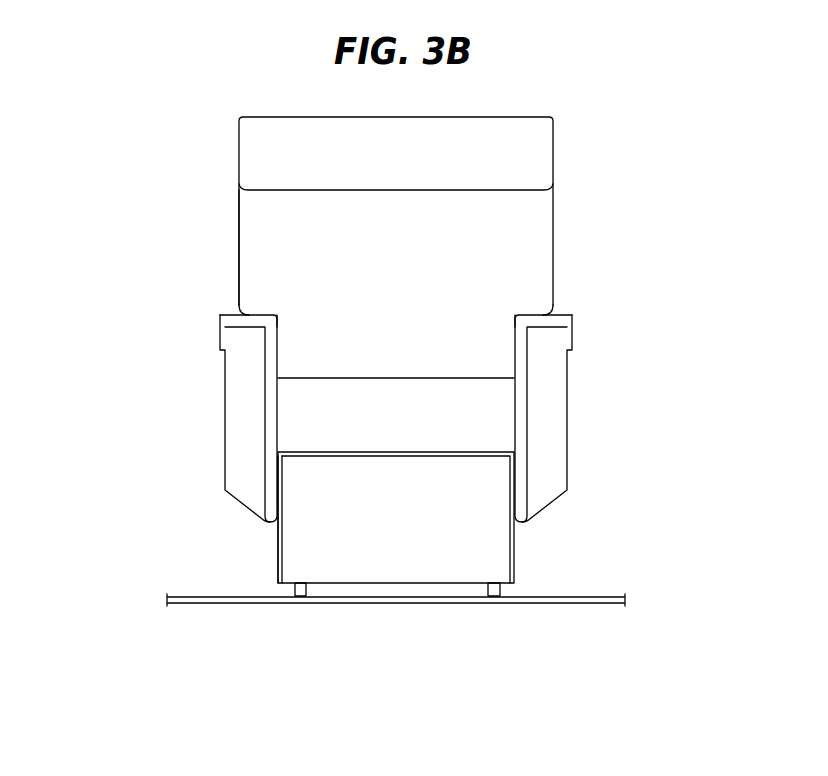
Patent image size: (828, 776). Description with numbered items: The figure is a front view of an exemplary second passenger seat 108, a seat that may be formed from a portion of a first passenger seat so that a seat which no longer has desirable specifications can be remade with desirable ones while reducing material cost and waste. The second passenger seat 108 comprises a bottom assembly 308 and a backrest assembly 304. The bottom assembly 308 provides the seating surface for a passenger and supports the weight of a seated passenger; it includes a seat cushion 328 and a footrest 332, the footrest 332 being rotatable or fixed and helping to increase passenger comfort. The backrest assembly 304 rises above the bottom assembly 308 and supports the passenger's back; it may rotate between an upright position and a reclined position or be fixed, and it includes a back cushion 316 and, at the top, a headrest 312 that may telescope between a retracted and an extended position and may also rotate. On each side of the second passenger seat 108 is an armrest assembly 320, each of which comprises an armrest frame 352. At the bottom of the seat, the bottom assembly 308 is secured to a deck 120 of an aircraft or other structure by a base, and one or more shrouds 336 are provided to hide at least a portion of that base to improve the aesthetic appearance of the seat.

The second passenger seat 108 is at (118, 319).
The deck 120 is at (583, 596).
The backrest assembly 304 is at (580, 220).
The bottom assembly 308 is at (590, 462).
The headrest 312 is at (312, 115).
The back cushion 316 is at (238, 260).
The armrest assembly 320 is at (205, 388).
The seat cushion 328 is at (351, 377).
The footrest 332 is at (278, 575).
The shroud 336 is at (295, 605).
The armrest frame 352 is at (223, 313).